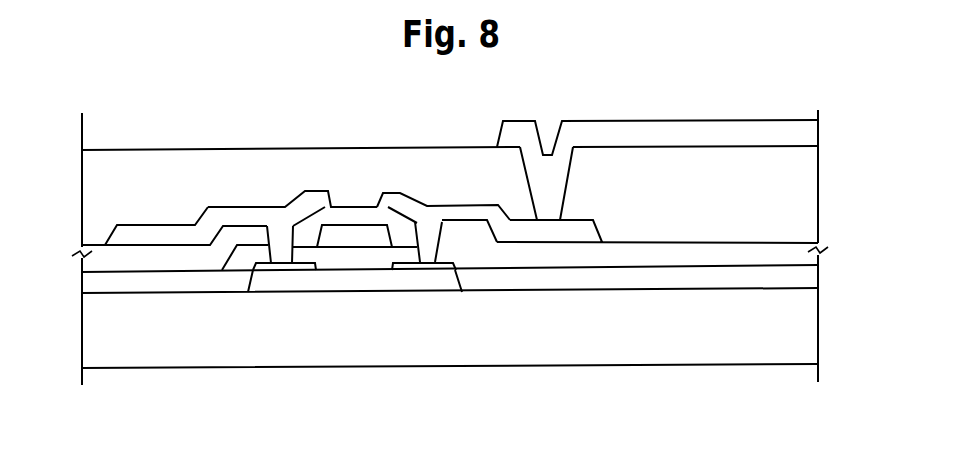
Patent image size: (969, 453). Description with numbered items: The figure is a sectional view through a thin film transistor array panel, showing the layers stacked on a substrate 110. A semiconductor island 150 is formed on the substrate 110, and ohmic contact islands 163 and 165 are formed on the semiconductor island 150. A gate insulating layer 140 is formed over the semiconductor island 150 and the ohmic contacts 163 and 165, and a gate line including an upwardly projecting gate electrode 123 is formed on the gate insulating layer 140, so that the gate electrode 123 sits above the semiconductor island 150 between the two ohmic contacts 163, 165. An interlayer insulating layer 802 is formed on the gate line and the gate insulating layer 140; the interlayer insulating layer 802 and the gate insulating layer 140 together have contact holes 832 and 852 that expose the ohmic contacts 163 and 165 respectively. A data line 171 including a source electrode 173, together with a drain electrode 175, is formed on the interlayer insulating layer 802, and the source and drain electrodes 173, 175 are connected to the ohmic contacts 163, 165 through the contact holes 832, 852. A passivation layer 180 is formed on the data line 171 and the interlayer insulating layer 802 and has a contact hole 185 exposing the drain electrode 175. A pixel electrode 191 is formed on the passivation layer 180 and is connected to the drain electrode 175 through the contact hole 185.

The substrate 110 is at (625, 357).
The gate insulating layer 140 is at (203, 293).
The interlayer insulating layer 802 is at (134, 262).
The semiconductor island 150 is at (314, 283).
The ohmic contact island 163 is at (281, 265).
The ohmic contact island 165 is at (419, 265).
The gate electrode 123 is at (363, 238).
The data line 171 is at (178, 233).
The source electrode 173 is at (233, 215).
The contact hole 832 is at (281, 228).
The drain electrode 175 is at (393, 198).
The contact hole 852 is at (432, 225).
The passivation layer 180 is at (655, 160).
The contact hole 185 is at (560, 162).
The pixel electrode 191 is at (722, 128).